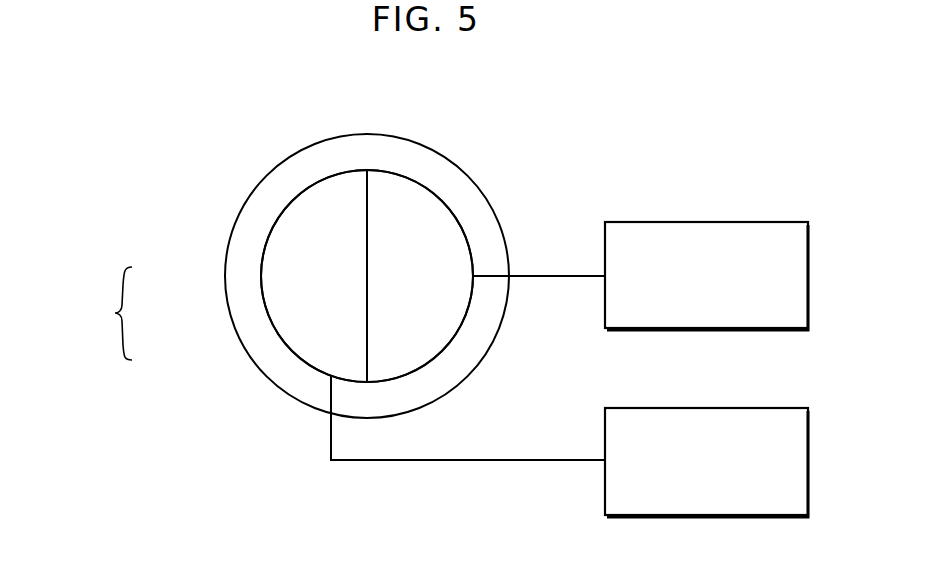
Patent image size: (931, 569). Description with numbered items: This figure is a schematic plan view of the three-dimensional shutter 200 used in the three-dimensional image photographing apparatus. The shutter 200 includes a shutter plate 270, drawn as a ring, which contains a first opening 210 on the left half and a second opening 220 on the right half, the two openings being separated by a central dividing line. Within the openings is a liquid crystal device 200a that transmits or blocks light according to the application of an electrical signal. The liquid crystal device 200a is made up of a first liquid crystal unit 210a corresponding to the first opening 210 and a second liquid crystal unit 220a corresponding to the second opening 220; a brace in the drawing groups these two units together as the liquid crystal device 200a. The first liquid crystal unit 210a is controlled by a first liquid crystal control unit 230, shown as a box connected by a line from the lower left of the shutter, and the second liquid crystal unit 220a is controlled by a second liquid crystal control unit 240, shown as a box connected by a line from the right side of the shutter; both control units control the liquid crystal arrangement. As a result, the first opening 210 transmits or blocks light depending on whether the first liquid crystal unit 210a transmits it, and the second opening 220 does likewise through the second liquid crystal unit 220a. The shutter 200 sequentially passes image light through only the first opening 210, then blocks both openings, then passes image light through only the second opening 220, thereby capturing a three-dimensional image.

The 3D shutter 200 is at (497, 163).
The liquid crystal device 200a is at (96, 313).
The first opening 210 is at (272, 235).
The first liquid crystal unit 210a is at (282, 277).
The second opening 220 is at (464, 222).
The second liquid crystal unit 220a is at (383, 344).
The first liquid crystal control unit 230 is at (708, 408).
The second liquid crystal control unit 240 is at (708, 222).
The shutter plate 270 is at (303, 167).